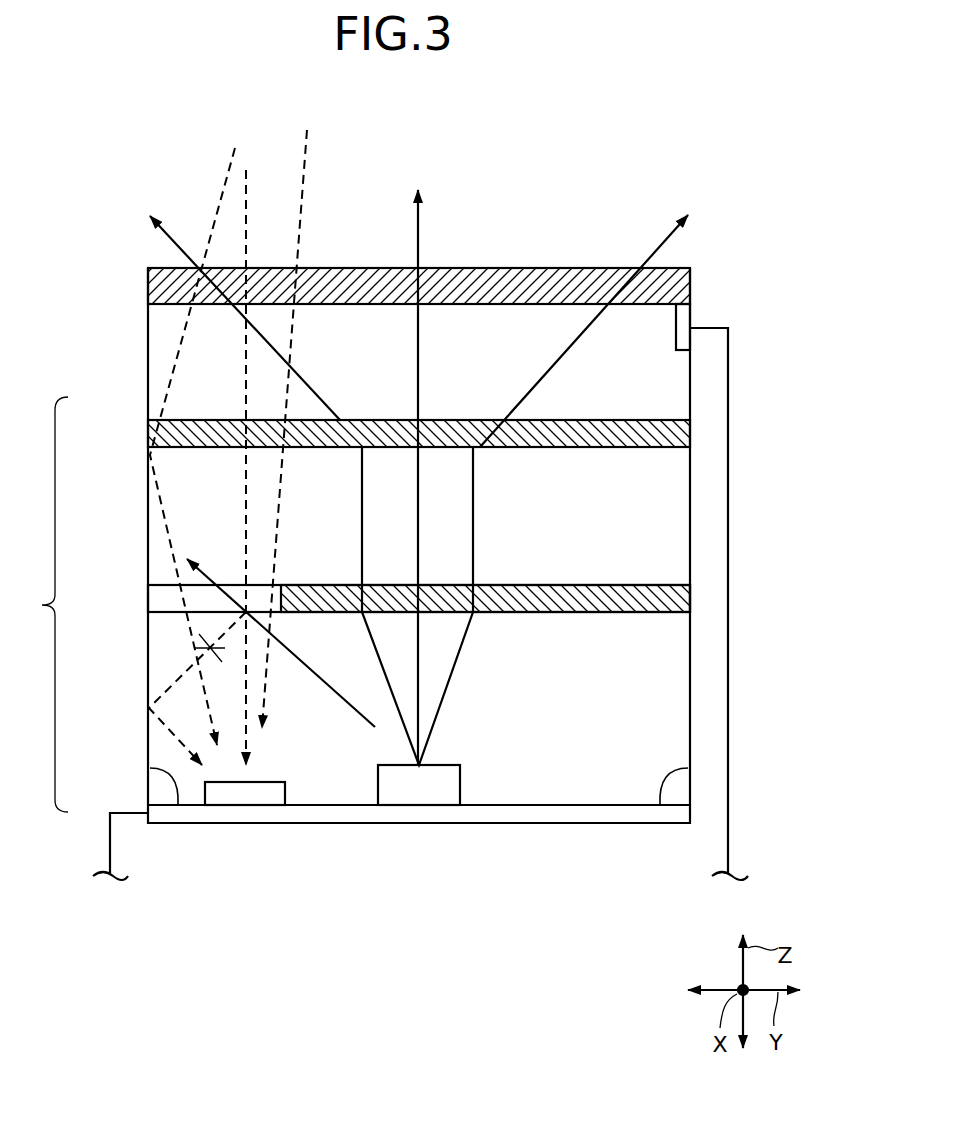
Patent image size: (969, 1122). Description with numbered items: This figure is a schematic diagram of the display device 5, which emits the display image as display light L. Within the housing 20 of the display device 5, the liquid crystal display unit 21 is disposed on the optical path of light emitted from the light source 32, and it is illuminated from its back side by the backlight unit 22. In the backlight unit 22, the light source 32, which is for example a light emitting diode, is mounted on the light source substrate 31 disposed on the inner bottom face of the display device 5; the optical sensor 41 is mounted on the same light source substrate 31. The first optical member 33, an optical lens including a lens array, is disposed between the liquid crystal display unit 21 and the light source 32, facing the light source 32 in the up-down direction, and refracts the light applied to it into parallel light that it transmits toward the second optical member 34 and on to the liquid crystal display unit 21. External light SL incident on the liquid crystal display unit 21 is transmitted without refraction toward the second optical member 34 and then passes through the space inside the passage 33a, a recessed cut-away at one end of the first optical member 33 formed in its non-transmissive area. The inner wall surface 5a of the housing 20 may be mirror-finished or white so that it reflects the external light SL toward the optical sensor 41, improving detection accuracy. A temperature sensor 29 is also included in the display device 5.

The display device 5 is at (661, 172).
The inner wall surface 5a is at (178, 805).
The housing 20 is at (147, 362).
The liquid crystal display unit 21 is at (146, 267).
The backlight unit 22 is at (38, 604).
The temperature sensor 29 is at (683, 318).
The light source substrate 31 is at (146, 804).
The light source 32 is at (419, 793).
The first optical member 33 is at (146, 584).
The passage 33a is at (167, 601).
The second optical member 34 is at (146, 419).
The optical sensor 41 is at (245, 793).
The display light L is at (180, 243).
The external light SL is at (235, 150).